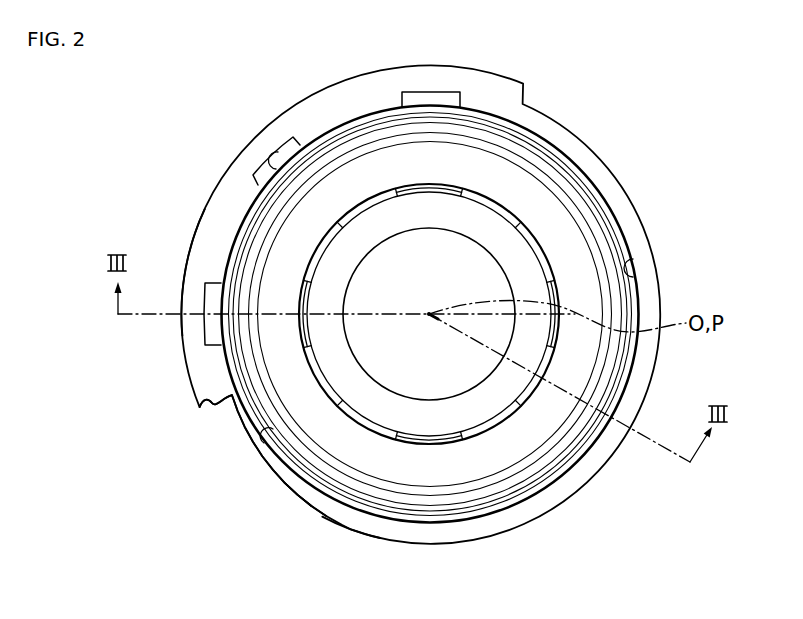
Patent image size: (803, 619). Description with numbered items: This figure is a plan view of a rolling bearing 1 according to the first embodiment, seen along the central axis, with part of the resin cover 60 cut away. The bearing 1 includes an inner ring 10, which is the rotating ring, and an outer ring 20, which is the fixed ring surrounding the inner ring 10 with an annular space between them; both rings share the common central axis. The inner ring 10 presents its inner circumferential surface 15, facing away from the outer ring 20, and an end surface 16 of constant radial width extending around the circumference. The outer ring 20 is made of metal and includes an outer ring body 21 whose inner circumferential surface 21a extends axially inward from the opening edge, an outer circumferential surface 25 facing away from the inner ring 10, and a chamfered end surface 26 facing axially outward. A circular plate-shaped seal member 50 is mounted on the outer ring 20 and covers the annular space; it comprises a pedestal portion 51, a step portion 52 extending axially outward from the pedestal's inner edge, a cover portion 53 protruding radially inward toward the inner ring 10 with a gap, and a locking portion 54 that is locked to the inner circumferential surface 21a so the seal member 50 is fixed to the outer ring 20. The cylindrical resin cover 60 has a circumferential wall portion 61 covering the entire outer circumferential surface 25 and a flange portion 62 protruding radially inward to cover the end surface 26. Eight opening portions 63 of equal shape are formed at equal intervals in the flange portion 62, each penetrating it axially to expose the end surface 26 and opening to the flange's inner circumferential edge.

The bearing 1 is at (660, 79).
The inner ring 10 is at (545, 403).
The inner circumferential surface 15 is at (485, 388).
The end surface 16 is at (466, 422).
The outer ring 20 is at (216, 421).
The outer ring body 21 is at (247, 435).
The inner circumferential surface 21a is at (268, 436).
The outer circumferential surface 25 is at (306, 506).
The end surface 26 is at (342, 514).
The seal member 50 is at (533, 122).
The pedestal portion 51 is at (548, 158).
The step portion 52 is at (573, 194).
The cover portion 53 is at (578, 240).
The locking portion 54 is at (632, 268).
The resin cover 60 is at (285, 100).
The circumferential wall portion 61 is at (205, 237).
The flange portion 62 is at (234, 207).
The opening portion 63 is at (278, 151).